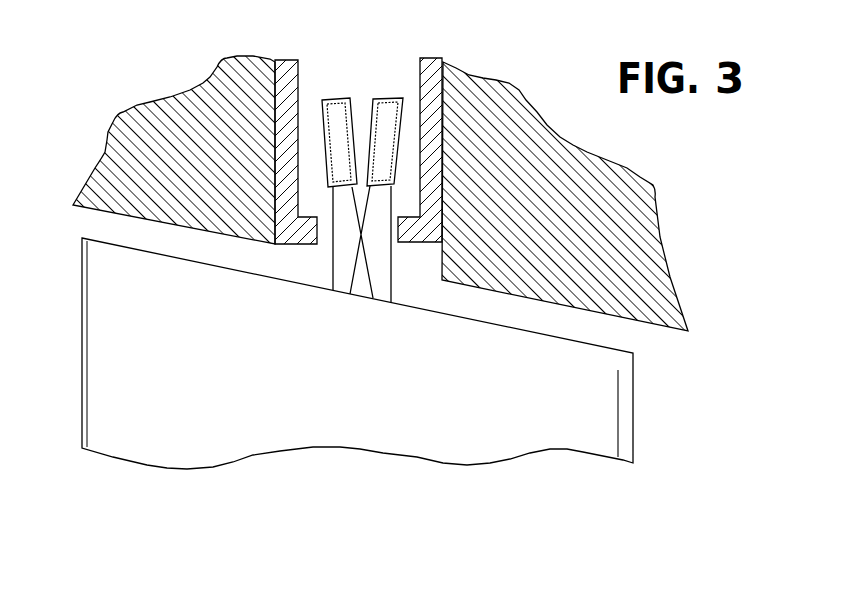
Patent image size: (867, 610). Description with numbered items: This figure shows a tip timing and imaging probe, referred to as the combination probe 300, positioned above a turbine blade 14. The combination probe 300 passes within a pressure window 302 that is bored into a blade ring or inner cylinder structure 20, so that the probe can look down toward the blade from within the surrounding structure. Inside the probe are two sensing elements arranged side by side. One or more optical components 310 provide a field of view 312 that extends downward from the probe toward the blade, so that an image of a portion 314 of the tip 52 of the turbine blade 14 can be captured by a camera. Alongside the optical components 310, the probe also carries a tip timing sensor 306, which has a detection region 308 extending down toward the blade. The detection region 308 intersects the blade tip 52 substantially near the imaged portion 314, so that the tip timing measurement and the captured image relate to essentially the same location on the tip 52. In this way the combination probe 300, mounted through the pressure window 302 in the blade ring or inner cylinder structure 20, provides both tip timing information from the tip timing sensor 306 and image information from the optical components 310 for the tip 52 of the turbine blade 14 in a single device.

The turbine blade 14 is at (262, 414).
The blade ring or inner cylinder structure 20 is at (155, 123).
The tip 52 is at (605, 348).
The combination probe 300 is at (368, 58).
The pressure window 302 is at (441, 61).
The tip timing sensor 306 is at (338, 106).
The detection region 308 is at (345, 242).
The optical components 310 is at (390, 106).
The field of view 312 is at (382, 258).
The imaged portion of the tip 314 is at (363, 295).